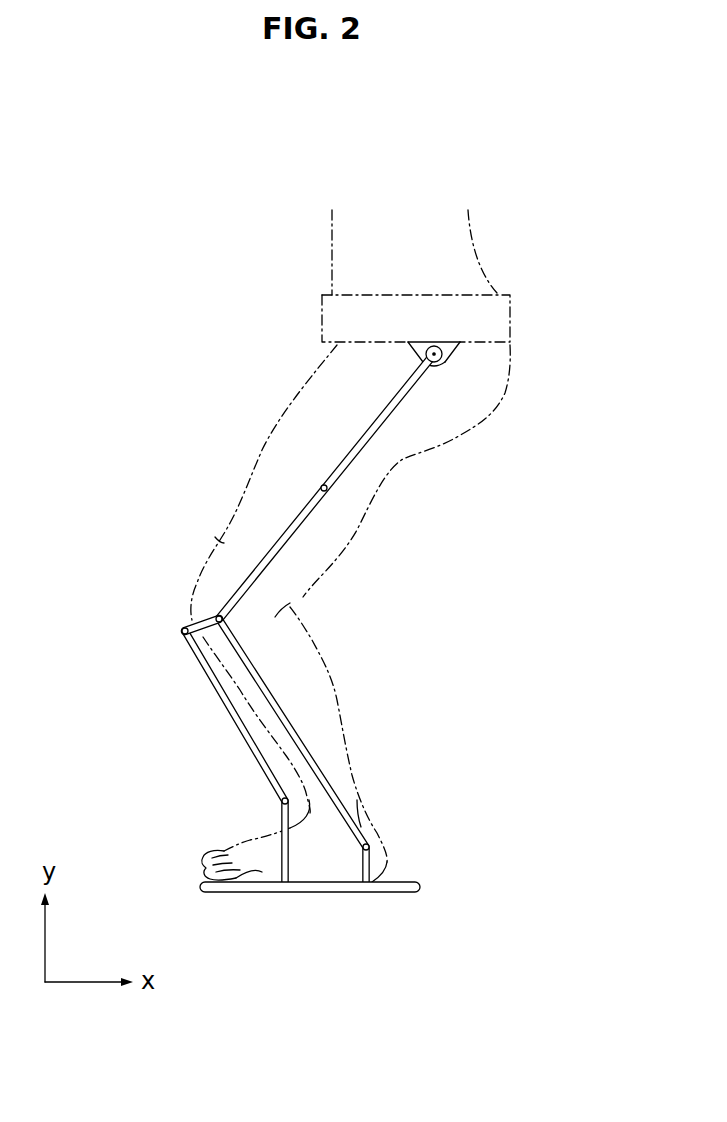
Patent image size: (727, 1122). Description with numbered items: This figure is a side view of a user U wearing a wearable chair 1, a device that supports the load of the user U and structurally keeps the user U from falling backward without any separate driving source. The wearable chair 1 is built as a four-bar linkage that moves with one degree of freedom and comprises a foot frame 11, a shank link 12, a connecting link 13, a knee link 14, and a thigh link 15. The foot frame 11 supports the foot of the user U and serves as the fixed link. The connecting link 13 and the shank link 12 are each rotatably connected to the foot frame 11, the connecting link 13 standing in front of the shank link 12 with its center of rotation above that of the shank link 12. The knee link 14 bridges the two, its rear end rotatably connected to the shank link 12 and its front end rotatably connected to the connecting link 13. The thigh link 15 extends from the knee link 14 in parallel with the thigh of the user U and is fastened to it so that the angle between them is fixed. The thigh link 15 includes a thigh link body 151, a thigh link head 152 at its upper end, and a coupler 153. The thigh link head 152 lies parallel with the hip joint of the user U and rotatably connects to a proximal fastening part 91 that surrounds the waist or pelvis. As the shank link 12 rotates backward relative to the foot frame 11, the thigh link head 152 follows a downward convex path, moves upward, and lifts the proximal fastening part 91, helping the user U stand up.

The wearable chair 1 is at (330, 114).
The user U is at (332, 258).
The proximal fastening part 91 is at (510, 295).
The foot frame 11 is at (323, 893).
The shank link 12 is at (293, 725).
The connecting link 13 is at (238, 722).
The knee link 14 is at (185, 625).
The thigh link 15 is at (338, 444).
The thigh link body 151 is at (366, 440).
The thigh link head 152 is at (446, 362).
The coupler 153 is at (321, 485).